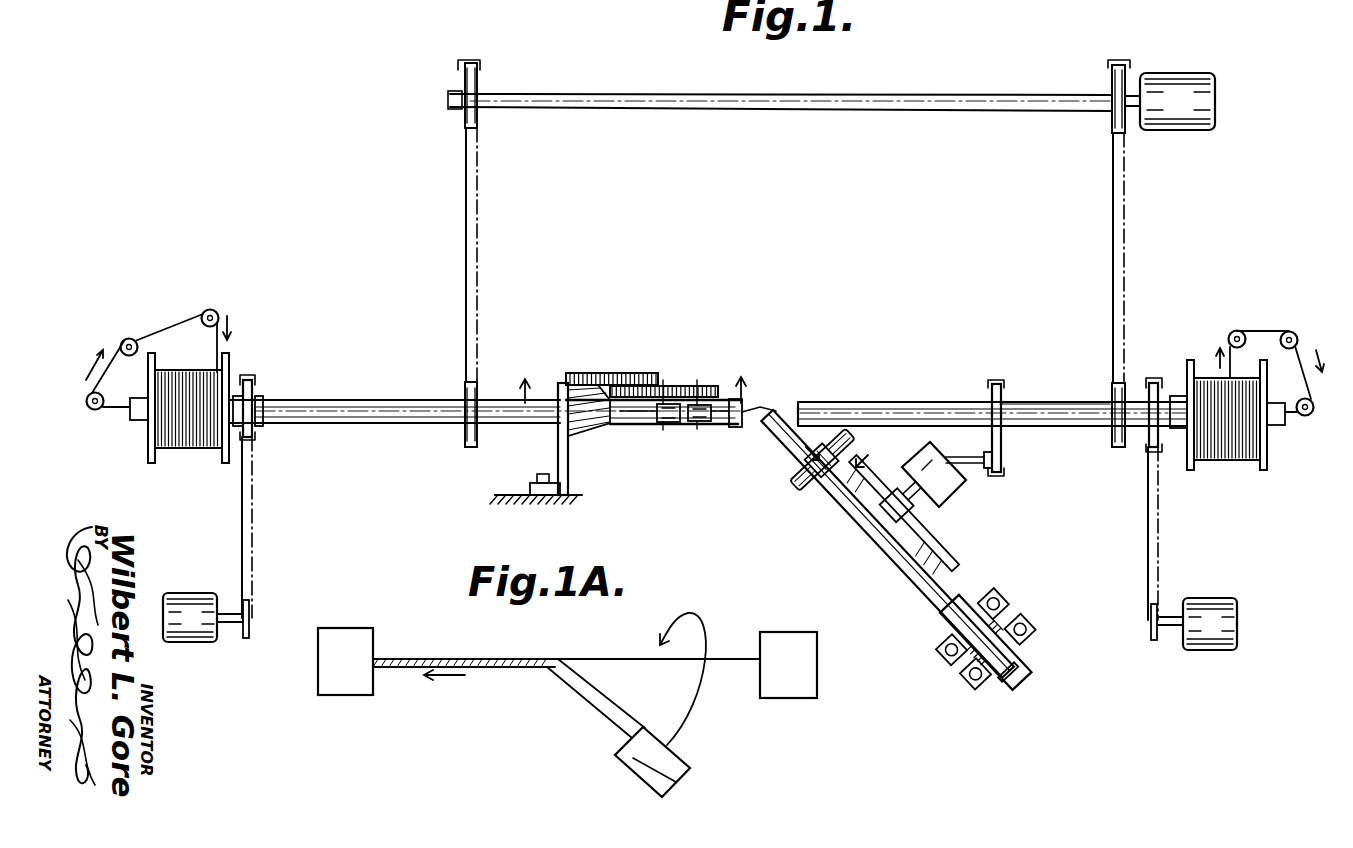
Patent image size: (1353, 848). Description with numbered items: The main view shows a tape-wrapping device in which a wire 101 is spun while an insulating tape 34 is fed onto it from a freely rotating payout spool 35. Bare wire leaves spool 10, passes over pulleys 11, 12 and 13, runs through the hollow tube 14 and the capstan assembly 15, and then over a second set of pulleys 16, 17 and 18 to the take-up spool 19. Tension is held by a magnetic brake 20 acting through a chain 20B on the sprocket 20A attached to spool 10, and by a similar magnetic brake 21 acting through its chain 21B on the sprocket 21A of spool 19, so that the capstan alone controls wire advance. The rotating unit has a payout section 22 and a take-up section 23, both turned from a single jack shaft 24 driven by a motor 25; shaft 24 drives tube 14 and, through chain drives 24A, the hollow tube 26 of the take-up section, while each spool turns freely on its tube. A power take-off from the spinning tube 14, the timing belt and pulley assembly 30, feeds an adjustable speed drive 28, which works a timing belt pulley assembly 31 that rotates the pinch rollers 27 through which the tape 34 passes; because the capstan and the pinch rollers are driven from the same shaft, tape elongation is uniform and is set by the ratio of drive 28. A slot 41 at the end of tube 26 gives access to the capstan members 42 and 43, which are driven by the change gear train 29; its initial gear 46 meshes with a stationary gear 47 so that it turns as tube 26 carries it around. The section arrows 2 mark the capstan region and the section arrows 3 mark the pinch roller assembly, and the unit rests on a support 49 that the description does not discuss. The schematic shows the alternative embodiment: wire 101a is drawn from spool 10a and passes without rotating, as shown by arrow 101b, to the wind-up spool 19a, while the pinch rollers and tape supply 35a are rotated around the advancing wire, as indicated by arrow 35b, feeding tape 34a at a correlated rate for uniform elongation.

In FIG. 1, the spool 10 is at (1262, 468).
In FIG. 1A, the spool 10a is at (800, 687).
In FIG. 1, the pulley 11 is at (1237, 330).
In FIG. 1, the pulley 12 is at (1292, 332).
In FIG. 1, the pulley 13 is at (1305, 415).
In FIG. 1, the hollow tube 14 is at (910, 415).
In FIG. 1, the capstan assembly 15 is at (665, 442).
In FIG. 1, the pulley 16 is at (92, 412).
In FIG. 1, the pulley 17 is at (124, 340).
In FIG. 1, the pulley 18 is at (215, 312).
In FIG. 1, the take-up spool 19 is at (152, 462).
In FIG. 1A, the wind-up spool 19a is at (352, 683).
In FIG. 1, the magnetic brake 20 is at (1205, 652).
In FIG. 1, the sprocket 20A is at (1178, 405).
In FIG. 1, the chain 20B is at (1158, 548).
In FIG. 1, the magnetic brake 21 is at (190, 642).
In FIG. 1, the sprocket 21A is at (236, 394).
In FIG. 1, the chain 21B is at (253, 503).
In FIG. 1, the payout section 22 is at (1078, 392).
In FIG. 1, the take-up section 23 is at (362, 390).
In FIG. 1, the drive shaft 24 is at (618, 78).
In FIG. 1, the chain drives 24A is at (478, 226).
In FIG. 1, the motor 25 is at (1178, 128).
In FIG. 1, the hollow tube 26 is at (378, 418).
In FIG. 1, the pinch rollers 27 is at (786, 501).
In FIG. 1, the adjustable speed drive 28 is at (955, 478).
In FIG. 1, the change gears 29 is at (624, 366).
In FIG. 1, the timing belt and pulley assembly 30 is at (1012, 448).
In FIG. 1, the timing belt pulley assembly 31 is at (888, 523).
In FIG. 1, the insulating tape 34 is at (858, 507).
In FIG. 1A, the tape 34a is at (605, 720).
In FIG. 1, the payout spool 35 is at (949, 622).
In FIG. 1A, the tape supply 35a is at (675, 778).
In FIG. 1A, the arrow 35b is at (697, 690).
In FIG. 1, the slot 41 is at (735, 430).
In FIG. 1, the capstan member 42 is at (660, 428).
In FIG. 1, the capstan member 43 is at (705, 428).
In FIG. 1, the initial gear 46 is at (578, 372).
In FIG. 1, the stationary gear 47 is at (572, 430).
In FIG. 1, the support bracket 49 is at (566, 475).
In FIG. 1, the wire 101 is at (780, 412).
In FIG. 1A, the wire 101a is at (522, 648).
In FIG. 1A, the arrow 101b is at (448, 680).
In FIG. 1, the section indicator 2 is at (630, 372).
In FIG. 1, the section indicator 3 is at (839, 446).